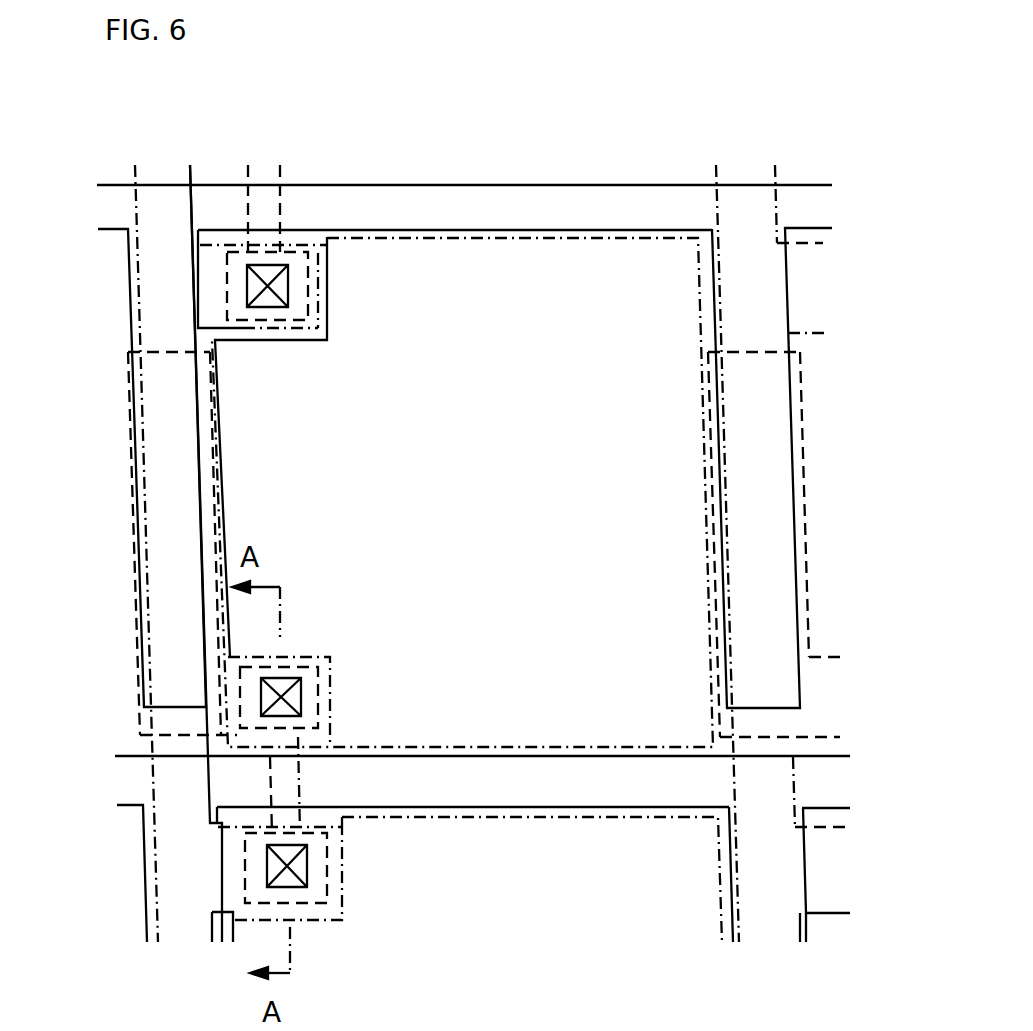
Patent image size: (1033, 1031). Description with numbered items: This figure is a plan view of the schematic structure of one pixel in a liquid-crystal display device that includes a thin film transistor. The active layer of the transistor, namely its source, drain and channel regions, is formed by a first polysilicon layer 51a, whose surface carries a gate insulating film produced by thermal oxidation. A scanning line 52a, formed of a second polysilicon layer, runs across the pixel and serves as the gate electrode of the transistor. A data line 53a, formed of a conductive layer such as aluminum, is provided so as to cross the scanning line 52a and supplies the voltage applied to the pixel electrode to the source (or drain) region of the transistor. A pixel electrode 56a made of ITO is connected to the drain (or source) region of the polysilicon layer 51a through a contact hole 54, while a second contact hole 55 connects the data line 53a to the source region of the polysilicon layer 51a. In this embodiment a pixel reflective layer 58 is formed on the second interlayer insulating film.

The first polysilicon layer 51a is at (298, 787).
The scanning line 52a is at (490, 183).
The data line 53a is at (130, 270).
The contact hole 54 is at (260, 698).
The contact hole 55 is at (302, 872).
The pixel electrode 56a is at (605, 238).
The pixel reflective layer 58 is at (489, 520).